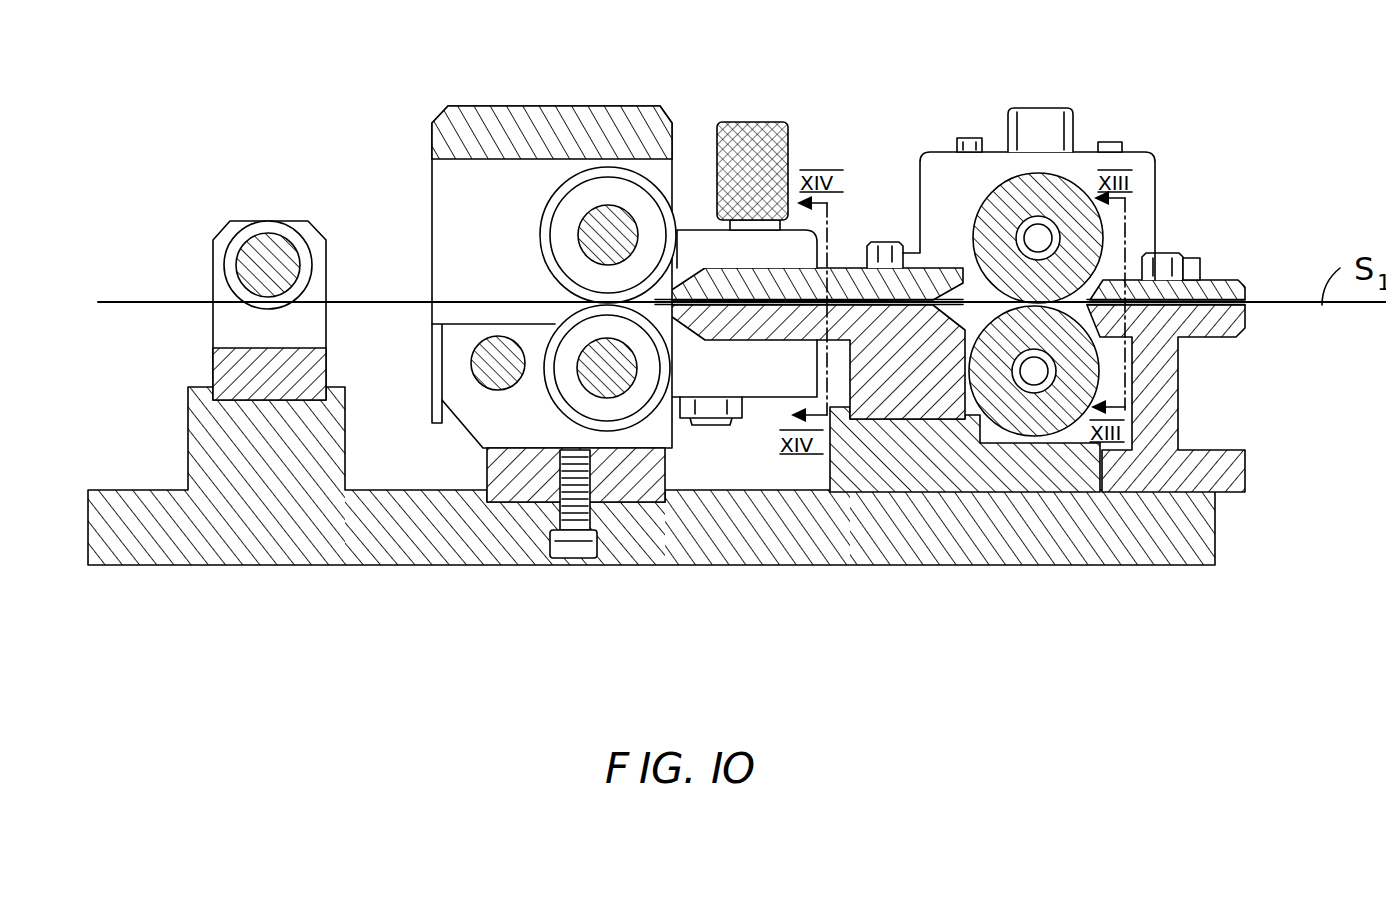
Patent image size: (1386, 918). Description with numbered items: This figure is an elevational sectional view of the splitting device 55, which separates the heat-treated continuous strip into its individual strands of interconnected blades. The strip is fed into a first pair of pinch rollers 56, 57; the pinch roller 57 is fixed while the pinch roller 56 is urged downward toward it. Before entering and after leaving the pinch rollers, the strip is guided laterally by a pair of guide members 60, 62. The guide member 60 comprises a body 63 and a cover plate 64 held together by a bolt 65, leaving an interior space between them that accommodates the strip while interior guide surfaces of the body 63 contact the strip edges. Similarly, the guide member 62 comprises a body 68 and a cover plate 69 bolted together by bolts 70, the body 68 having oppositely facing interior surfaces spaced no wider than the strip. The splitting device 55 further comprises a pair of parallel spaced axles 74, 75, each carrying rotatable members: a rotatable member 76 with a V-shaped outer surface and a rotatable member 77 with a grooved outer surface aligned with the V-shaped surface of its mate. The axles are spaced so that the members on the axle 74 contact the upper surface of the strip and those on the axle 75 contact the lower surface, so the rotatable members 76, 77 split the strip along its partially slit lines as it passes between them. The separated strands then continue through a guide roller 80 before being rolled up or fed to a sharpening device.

The splitting device 55 is at (185, 437).
The pinch roller 56 is at (1003, 176).
The pinch roller 57 is at (1045, 422).
The guide member 60 is at (1211, 326).
The guide member 62 is at (850, 260).
The body 63 is at (1247, 337).
The cover plate 64 is at (1243, 288).
The bolt 65 is at (1158, 253).
The body 68 is at (902, 393).
The cover plate 69 is at (728, 266).
The bolts 70 is at (885, 242).
The axle 74 is at (597, 228).
The axle 75 is at (578, 377).
The rotatable member 76 is at (622, 168).
The rotatable member 77 is at (543, 342).
The guide roller 80 is at (235, 240).